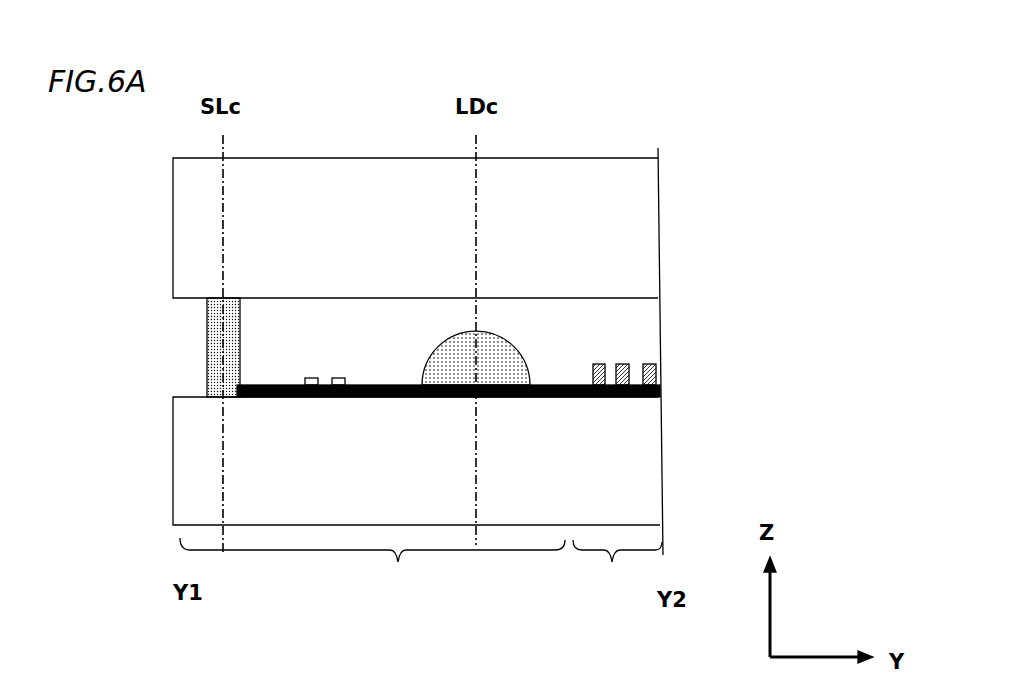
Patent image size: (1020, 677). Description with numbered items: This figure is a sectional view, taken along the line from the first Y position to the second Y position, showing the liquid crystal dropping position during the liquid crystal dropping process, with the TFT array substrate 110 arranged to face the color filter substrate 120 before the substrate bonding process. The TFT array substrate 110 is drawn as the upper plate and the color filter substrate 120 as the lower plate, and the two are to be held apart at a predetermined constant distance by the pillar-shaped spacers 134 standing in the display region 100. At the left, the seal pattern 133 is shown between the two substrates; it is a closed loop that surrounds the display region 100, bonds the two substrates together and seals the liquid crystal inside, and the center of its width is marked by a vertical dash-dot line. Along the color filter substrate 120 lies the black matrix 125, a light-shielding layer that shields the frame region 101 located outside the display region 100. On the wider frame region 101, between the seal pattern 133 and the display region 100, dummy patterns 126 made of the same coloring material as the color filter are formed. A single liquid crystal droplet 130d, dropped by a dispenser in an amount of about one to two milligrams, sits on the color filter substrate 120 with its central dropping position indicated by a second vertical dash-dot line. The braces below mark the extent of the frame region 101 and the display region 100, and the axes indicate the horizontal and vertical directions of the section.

The TFT array substrate 110 is at (183, 230).
The color filter substrate 120 is at (186, 462).
The seal pattern 133 is at (207, 343).
The black matrix 125 is at (388, 398).
The dummy patterns 126 is at (339, 378).
The liquid crystal droplet 130d is at (452, 348).
The pillar-shaped spacers 134 is at (602, 364).
The frame region 101 is at (372, 571).
The display region 100 is at (617, 574).